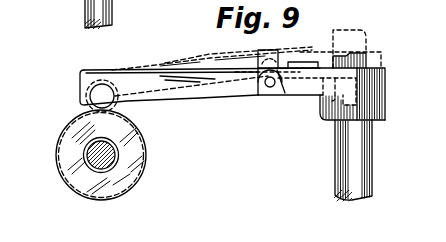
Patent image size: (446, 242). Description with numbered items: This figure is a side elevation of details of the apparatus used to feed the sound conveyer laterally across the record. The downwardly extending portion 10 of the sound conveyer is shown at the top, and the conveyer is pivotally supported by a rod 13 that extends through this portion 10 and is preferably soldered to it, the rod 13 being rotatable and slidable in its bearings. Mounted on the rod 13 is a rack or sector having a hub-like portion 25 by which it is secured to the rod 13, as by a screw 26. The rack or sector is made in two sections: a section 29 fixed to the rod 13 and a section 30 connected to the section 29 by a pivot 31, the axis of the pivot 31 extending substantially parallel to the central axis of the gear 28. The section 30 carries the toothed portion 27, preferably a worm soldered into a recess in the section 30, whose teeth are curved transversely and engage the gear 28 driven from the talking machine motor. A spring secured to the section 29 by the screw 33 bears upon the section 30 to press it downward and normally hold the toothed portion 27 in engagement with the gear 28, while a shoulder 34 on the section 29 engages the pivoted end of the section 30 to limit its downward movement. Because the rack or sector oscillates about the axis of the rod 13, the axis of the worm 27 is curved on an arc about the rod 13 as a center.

The downwardly extending portion of the sound conveyer 10 is at (114, 20).
The rod 13 is at (373, 184).
The hub-like portion 25 is at (386, 121).
The screw 26 is at (321, 102).
The toothed portion 27 is at (82, 100).
The gear 28 is at (78, 188).
The first section of the rack or sector 29 is at (312, 95).
The second section of the rack or sector 30 is at (228, 93).
The pivot 31 is at (263, 91).
The screw 33 is at (300, 60).
The shoulder 34 is at (282, 96).